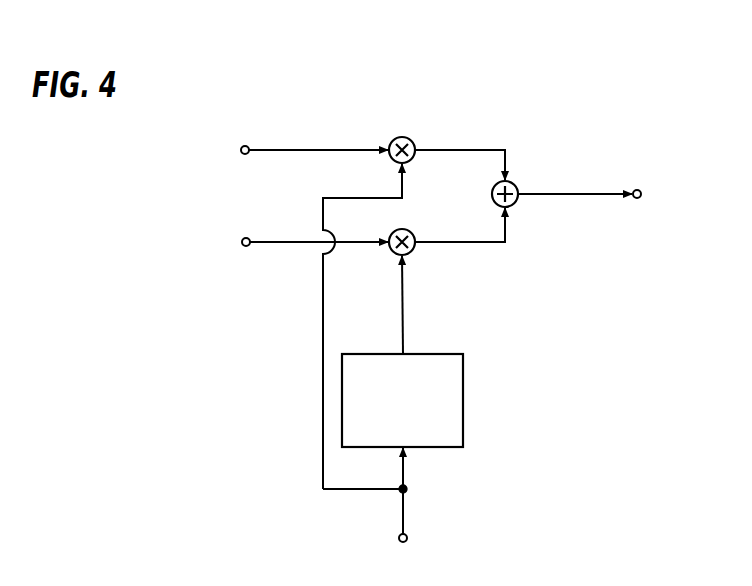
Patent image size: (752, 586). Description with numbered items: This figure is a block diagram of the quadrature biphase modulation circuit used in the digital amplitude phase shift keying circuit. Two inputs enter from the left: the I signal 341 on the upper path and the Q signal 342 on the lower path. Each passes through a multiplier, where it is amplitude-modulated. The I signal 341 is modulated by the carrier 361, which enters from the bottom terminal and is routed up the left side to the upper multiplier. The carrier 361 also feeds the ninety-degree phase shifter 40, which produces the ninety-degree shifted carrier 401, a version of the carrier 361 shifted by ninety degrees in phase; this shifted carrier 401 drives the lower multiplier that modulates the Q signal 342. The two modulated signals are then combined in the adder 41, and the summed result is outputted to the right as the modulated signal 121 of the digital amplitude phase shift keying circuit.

The I signal 341 is at (310, 150).
The Q signal 342 is at (306, 245).
The adder 41 is at (522, 184).
The modulated signal 121 is at (574, 196).
The 90° shifted carrier 401 is at (405, 283).
The 90° phase shifter 40 is at (440, 353).
The carrier 361 is at (405, 503).